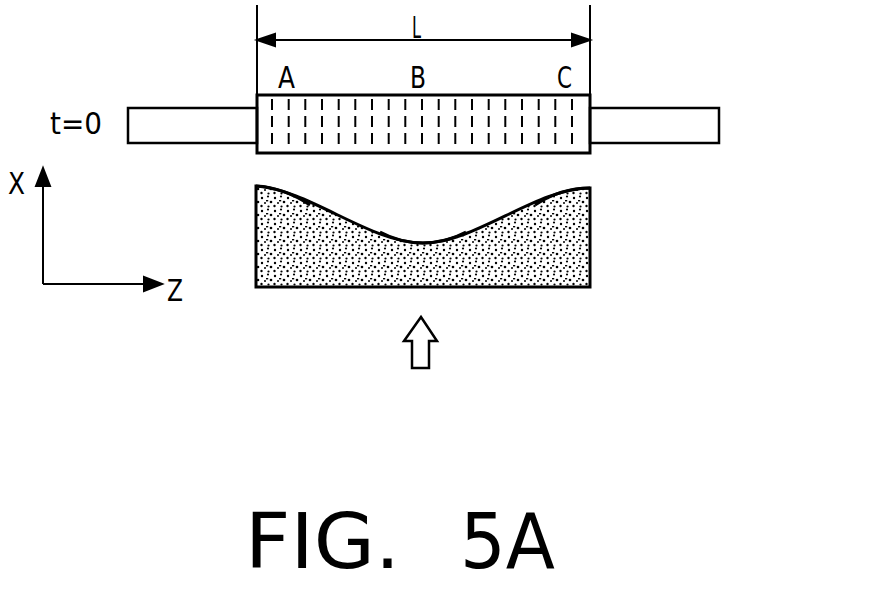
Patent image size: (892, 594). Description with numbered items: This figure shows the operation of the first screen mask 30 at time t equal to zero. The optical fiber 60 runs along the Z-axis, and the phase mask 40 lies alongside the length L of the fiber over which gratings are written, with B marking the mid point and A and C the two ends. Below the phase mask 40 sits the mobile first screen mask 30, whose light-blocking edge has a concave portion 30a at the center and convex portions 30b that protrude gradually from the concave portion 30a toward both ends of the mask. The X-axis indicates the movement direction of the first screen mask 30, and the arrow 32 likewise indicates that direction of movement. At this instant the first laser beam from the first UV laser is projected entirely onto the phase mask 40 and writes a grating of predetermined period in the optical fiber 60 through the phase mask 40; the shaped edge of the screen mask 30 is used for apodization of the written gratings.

The phase mask 40 is at (578, 93).
The optical fiber 60 is at (693, 145).
The first screen mask 30 is at (560, 293).
The concave portion 30a is at (422, 240).
The convex portions 30b is at (278, 187).
The direction of motion arrow 32 is at (429, 362).